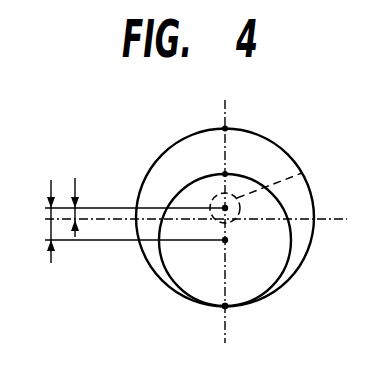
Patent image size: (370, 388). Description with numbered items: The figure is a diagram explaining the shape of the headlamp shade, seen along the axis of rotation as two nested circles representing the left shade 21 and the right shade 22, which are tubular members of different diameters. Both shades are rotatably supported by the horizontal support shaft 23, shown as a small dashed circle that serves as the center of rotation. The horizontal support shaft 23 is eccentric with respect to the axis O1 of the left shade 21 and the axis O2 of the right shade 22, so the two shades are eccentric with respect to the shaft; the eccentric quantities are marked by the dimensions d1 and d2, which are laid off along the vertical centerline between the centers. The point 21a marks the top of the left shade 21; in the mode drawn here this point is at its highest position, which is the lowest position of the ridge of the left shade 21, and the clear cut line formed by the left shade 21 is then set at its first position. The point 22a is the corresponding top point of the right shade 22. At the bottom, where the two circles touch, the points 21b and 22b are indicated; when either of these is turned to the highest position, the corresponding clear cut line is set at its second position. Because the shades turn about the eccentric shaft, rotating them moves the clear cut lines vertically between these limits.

The right shade 22 is at (258, 134).
The left shade 21 is at (286, 272).
The point of the shade 22 22a is at (225, 128).
The point of the shade 21 21a is at (225, 174).
The horizontal support shaft 23 is at (302, 173).
The axis of the shade 22 O2 is at (225, 208).
The axis of the shade 21 O1 is at (225, 240).
The point of the shade 21 21b is at (225, 306).
The point of the shade 22 22b is at (225, 306).
The eccentric quantity d1 is at (126, 221).
The eccentric quantity d2 is at (75, 212).